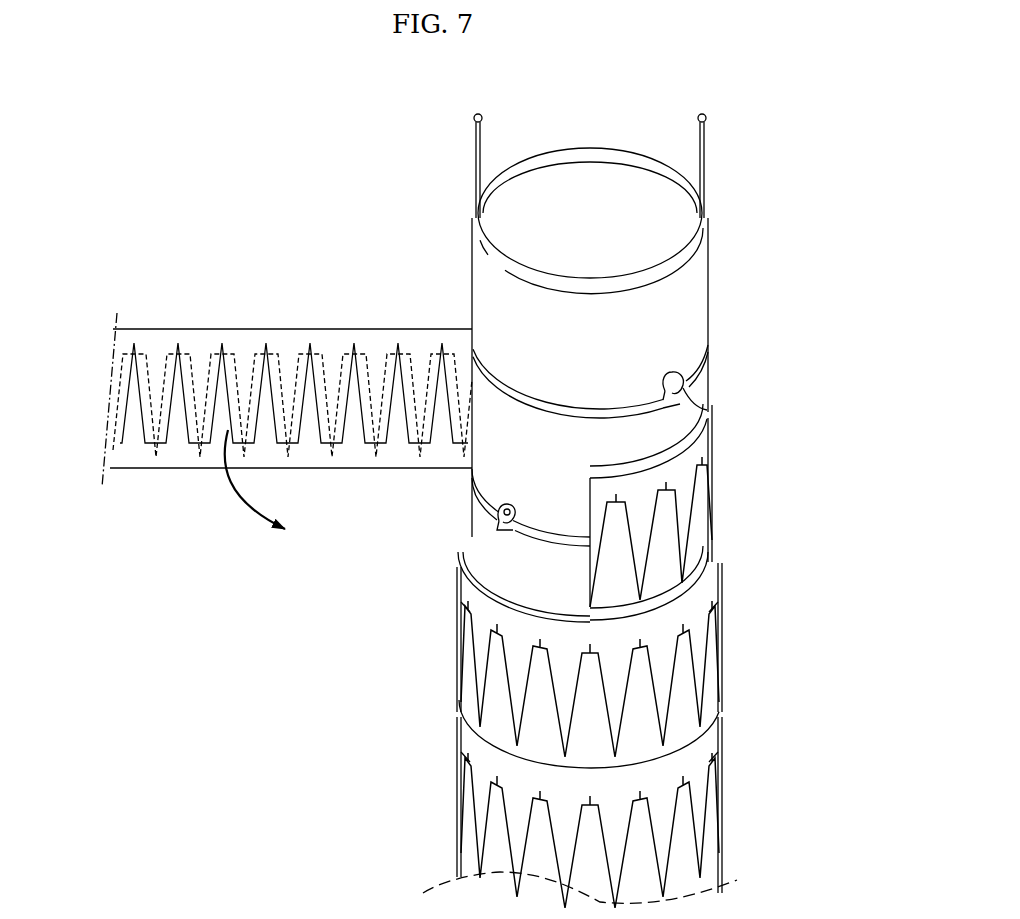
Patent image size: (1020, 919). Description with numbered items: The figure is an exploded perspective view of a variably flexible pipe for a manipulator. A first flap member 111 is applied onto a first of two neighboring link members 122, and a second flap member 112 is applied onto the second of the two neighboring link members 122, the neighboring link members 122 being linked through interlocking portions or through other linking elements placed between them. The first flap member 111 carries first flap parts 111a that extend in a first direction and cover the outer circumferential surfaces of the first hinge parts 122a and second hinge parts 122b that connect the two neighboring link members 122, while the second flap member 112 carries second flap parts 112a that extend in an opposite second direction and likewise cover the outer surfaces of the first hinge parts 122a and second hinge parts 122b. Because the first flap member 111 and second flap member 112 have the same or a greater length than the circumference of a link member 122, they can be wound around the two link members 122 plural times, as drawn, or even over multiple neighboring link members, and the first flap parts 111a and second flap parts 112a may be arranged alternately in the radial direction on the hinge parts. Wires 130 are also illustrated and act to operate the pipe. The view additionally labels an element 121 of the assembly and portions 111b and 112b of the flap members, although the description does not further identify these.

The wires 130 is at (700, 137).
The cylindrical body 121 is at (713, 293).
The link member 122 is at (713, 381).
The first hinge part 122a is at (707, 410).
The second hinge part 122b is at (500, 522).
The first flap member 111 is at (292, 376).
The first flap part 111a is at (390, 423).
The upper edge of strip 111b is at (244, 338).
The second flap member 112 is at (255, 437).
The second flap part 112a is at (122, 365).
The lower edge of second strip 112b is at (173, 460).